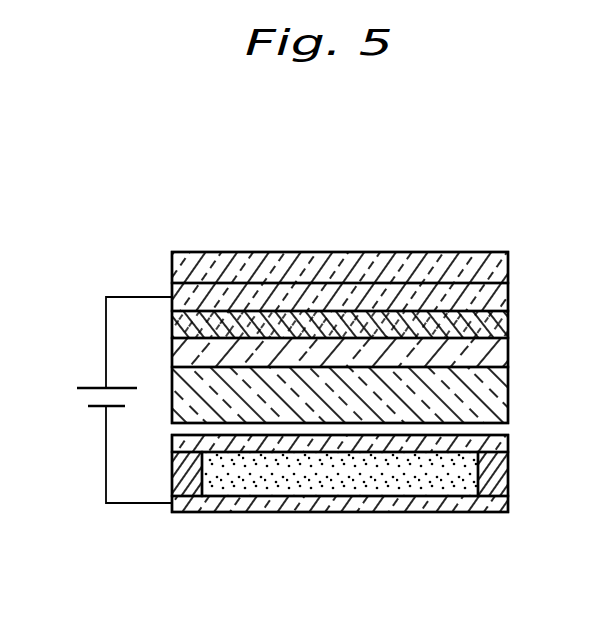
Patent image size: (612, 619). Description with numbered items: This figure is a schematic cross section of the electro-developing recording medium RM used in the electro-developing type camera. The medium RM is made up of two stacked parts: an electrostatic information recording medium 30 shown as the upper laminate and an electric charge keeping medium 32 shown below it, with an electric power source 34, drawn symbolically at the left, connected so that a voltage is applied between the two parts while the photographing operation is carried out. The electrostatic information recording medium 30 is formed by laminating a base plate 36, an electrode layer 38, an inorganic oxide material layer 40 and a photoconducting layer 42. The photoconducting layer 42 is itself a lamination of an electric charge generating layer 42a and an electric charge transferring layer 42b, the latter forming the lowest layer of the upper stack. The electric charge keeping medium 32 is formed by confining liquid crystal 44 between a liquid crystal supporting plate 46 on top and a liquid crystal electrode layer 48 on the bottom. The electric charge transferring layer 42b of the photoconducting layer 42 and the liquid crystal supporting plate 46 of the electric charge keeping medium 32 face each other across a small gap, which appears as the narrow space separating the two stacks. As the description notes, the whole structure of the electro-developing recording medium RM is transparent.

The electrostatic information recording medium 30 is at (357, 319).
The electric charge keeping medium 32 is at (342, 518).
The electric power source 34 is at (102, 408).
The base plate 36 is at (467, 272).
The electrode layer 38 is at (322, 297).
The inorganic oxide material layer 40 is at (495, 301).
The photoconducting layer 42 is at (379, 403).
The electric charge generating layer 42a is at (497, 330).
The electric charge transferring layer 42b is at (497, 418).
The liquid crystal 44 is at (373, 483).
The liquid crystal supporting plate 46 is at (288, 445).
The liquid crystal electrode layer 48 is at (473, 505).
The electro-developing recording medium RM is at (102, 449).